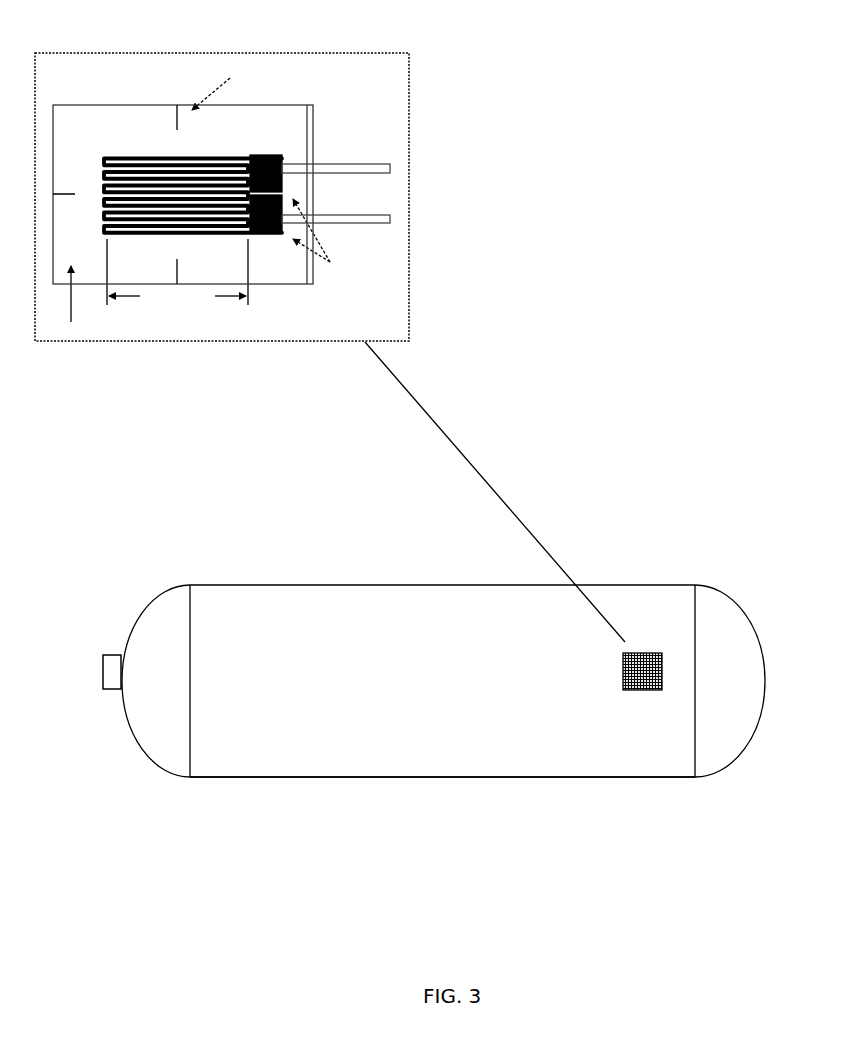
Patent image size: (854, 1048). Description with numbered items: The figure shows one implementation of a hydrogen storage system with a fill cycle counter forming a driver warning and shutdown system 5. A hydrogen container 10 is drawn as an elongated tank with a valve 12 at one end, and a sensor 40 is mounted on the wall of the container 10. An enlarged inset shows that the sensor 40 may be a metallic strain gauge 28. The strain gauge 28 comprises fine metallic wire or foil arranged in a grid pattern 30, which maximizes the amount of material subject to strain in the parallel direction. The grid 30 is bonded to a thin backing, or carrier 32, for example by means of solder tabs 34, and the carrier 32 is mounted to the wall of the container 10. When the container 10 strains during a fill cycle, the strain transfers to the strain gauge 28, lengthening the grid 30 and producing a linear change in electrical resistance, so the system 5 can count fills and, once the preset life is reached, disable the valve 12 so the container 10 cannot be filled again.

The driver warning and shutdown system 5 is at (261, 594).
The hydrogen container 10 is at (451, 766).
The valve 12 is at (103, 670).
The metallic strain gauge 28 is at (348, 53).
The grid pattern 30 is at (155, 175).
The carrier 32 is at (277, 107).
The solder tabs 34 is at (283, 157).
The sensor 40 is at (643, 669).